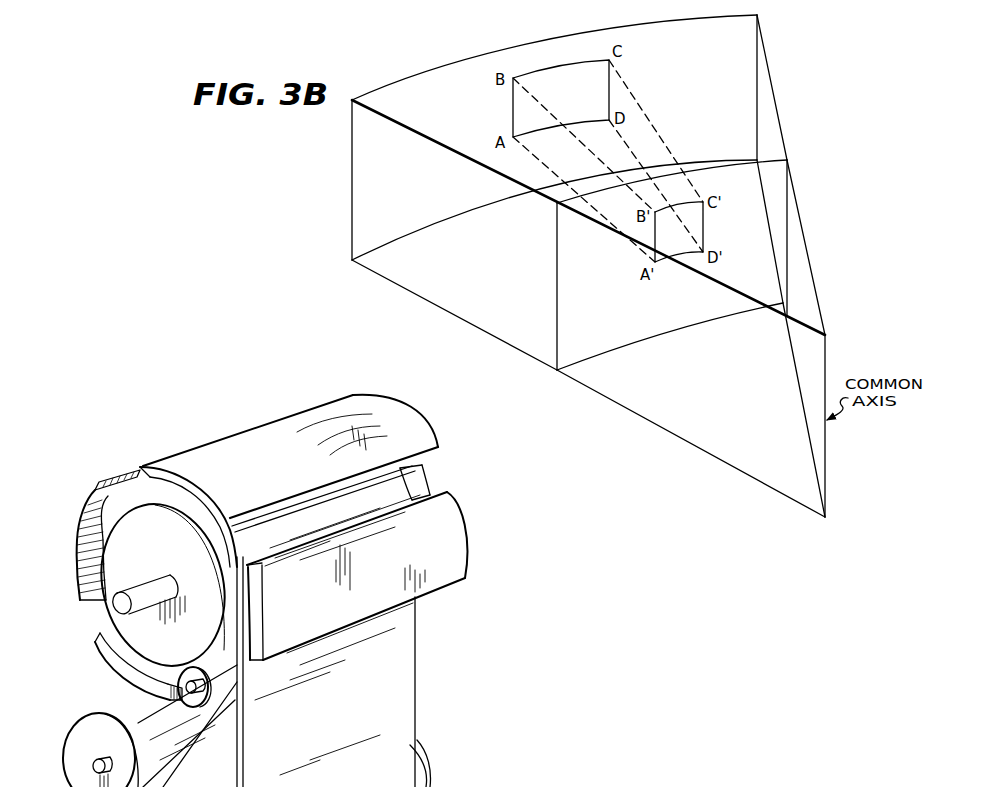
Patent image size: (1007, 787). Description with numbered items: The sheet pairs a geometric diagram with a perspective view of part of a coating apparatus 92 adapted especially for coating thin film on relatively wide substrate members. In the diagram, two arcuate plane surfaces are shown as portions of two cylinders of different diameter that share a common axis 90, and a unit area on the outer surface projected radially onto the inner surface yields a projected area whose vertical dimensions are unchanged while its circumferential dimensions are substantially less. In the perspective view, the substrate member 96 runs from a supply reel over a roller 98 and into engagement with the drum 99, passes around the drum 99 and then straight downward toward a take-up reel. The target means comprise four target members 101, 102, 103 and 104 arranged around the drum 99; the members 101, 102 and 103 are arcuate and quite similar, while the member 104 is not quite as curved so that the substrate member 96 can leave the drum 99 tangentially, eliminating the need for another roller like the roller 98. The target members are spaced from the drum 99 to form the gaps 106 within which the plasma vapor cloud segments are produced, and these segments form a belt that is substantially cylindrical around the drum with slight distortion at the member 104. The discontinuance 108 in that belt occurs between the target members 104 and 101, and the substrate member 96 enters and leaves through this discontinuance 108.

In FIG. 3B, the axis 90 is at (825, 455).
In FIG. 4, the apparatus 92 is at (507, 557).
In FIG. 4, the substrate member 96 is at (343, 721).
In FIG. 4, the roller 98 is at (180, 683).
In FIG. 4, the drum 99 is at (205, 641).
In FIG. 4, the target member 101 is at (105, 651).
In FIG. 4, the target member 102 is at (85, 502).
In FIG. 4, the target member 103 is at (252, 447).
In FIG. 4, the target member 104 is at (430, 574).
In FIG. 4, the gaps 106 is at (97, 597).
In FIG. 4, the discontinuance 108 is at (145, 718).